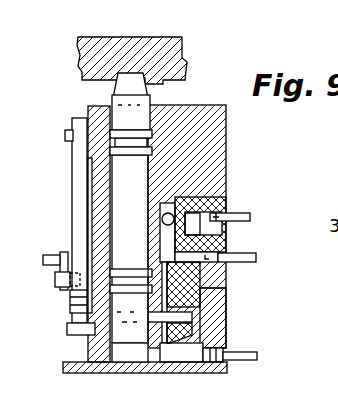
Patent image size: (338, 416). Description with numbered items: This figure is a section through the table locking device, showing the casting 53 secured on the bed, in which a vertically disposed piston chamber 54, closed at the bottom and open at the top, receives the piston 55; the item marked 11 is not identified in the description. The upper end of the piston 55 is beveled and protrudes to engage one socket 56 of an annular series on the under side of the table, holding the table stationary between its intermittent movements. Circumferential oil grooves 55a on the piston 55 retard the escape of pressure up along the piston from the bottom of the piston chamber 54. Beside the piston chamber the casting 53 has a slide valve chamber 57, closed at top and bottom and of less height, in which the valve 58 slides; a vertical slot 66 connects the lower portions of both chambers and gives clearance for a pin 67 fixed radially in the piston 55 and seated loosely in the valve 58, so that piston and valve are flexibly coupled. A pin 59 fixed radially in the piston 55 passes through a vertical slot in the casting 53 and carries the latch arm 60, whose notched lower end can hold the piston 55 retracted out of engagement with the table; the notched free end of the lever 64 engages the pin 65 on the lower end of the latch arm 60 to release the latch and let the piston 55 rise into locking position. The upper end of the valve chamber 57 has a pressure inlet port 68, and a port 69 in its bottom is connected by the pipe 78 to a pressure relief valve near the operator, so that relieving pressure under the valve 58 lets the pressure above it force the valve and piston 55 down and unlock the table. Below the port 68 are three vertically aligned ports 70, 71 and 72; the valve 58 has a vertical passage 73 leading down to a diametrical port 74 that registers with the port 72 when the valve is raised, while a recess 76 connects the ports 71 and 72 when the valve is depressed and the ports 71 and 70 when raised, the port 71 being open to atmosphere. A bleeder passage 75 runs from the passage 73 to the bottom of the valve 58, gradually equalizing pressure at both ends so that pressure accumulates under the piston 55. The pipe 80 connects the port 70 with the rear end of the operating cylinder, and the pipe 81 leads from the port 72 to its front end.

The block 11 is at (163, 37).
The socket 56 is at (146, 80).
The casting 53 is at (208, 226).
The piston chamber 54 is at (112, 208).
The piston 55 is at (131, 219).
The circumferential oil grooves 55a is at (132, 148).
The pin 59 is at (64, 134).
The latch arm 60 is at (72, 152).
The lever 64 is at (61, 253).
The pin 65 is at (56, 279).
The vertical slot 66 is at (160, 352).
The pin 67 is at (137, 348).
The pressure inlet port 68 is at (205, 204).
The port 69 is at (217, 352).
The port 70 is at (207, 216).
The port 71 is at (228, 231).
The port 72 is at (230, 251).
The vertical passage 73 is at (150, 236).
The diametrical port 74 is at (229, 270).
The bleeder passage 75 is at (155, 298).
The recess 76 is at (252, 219).
The pipe 78 is at (246, 361).
The pipe 80 is at (280, 214).
The pipe 81 is at (257, 259).
The slide valve chamber 57 is at (190, 357).
The valve 58 is at (229, 289).